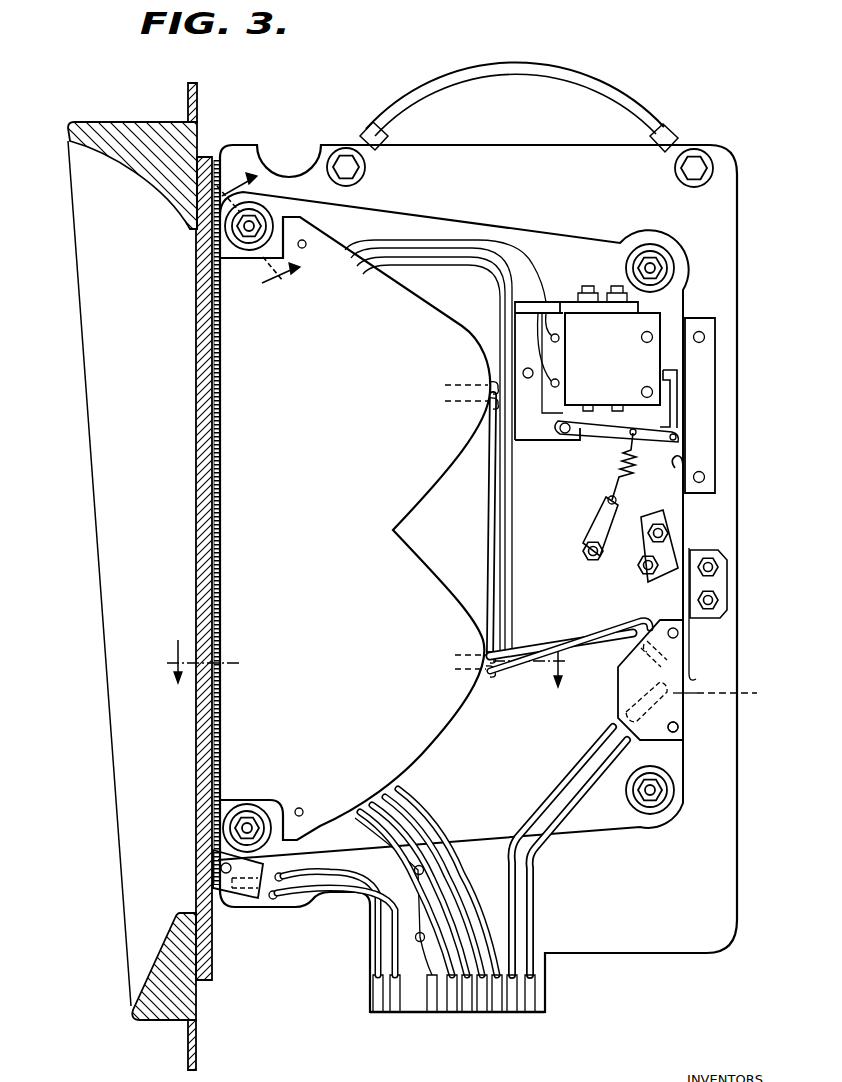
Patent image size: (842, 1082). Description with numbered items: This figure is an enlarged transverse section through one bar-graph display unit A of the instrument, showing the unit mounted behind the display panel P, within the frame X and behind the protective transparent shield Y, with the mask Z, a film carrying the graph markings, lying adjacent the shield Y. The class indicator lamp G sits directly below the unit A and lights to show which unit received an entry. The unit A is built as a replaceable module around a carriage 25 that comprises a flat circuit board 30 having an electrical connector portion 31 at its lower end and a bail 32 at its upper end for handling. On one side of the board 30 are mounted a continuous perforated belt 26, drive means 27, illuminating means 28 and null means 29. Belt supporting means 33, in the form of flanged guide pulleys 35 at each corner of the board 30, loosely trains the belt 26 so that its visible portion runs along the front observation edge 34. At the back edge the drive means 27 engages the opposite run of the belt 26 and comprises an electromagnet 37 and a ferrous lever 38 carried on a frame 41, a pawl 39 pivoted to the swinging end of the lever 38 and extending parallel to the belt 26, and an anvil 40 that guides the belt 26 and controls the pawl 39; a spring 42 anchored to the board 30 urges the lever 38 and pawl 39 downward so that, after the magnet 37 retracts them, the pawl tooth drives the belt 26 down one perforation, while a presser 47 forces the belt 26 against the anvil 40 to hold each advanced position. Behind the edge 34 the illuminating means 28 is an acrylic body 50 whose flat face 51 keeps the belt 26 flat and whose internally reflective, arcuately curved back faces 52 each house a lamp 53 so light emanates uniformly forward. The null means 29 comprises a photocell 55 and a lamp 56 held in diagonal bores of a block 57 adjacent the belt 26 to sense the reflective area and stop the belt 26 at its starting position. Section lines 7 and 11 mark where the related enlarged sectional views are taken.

The section line 7— 7 is at (374, 662).
The section line 11— 11 is at (261, 226).
The carriage 25 is at (736, 256).
The belt 26 is at (545, 230).
The drive means 27 is at (678, 316).
The illuminating means 28 is at (246, 352).
The null means 29 is at (690, 723).
The circuit board 30 is at (578, 906).
The electrical connector portion 31 is at (412, 1000).
The bail 32 is at (610, 98).
The belt supporting means 33 is at (617, 808).
The front edge 34 is at (205, 233).
The guide pulleys 35 is at (250, 247).
The electromagnet 37 is at (612, 348).
The lever 38 is at (598, 433).
The pawl 39 is at (679, 414).
The anvil 40 is at (706, 386).
The frame 41 is at (536, 433).
The spring 42 is at (612, 477).
The presser 47 is at (673, 468).
The body of light transporting material 50 is at (355, 528).
The face 51 is at (213, 544).
The back face 52 is at (458, 328).
The lamp 53 is at (468, 405).
The photocell 55 is at (728, 692).
The lamp 56 is at (650, 645).
The block 57 is at (673, 673).
The display unit A is at (392, 95).
The class indicator lamp G is at (208, 873).
The display panel P is at (75, 473).
The frame X is at (107, 622).
The protective transparent shield Y is at (197, 431).
The mask Z is at (214, 484).